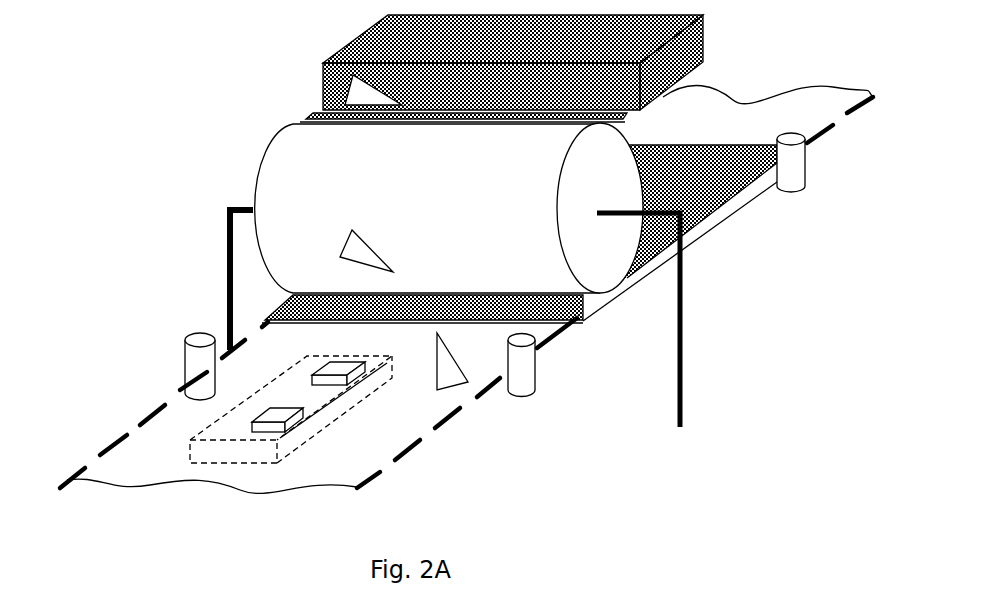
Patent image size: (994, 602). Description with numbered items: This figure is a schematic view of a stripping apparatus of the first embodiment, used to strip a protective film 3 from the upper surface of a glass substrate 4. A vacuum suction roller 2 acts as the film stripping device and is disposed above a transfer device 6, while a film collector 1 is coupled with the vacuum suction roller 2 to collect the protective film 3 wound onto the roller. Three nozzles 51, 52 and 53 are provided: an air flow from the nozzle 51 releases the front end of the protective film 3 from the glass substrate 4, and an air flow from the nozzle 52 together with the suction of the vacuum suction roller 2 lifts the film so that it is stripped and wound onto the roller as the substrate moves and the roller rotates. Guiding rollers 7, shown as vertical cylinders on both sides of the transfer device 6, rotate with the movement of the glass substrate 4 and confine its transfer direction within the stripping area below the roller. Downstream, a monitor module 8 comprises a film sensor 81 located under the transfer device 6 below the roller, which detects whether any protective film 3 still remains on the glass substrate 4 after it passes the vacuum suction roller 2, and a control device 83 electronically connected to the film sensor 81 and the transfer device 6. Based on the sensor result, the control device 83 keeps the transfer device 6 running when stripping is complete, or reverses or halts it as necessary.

The film collector 1 is at (688, 34).
The vacuum suction roller 2 is at (296, 160).
The protective film 3 is at (690, 200).
The glass substrate 4 is at (705, 226).
The nozzle 51 is at (448, 377).
The nozzle 52 is at (340, 257).
The nozzle 53 is at (363, 97).
The transfer device 6 is at (128, 432).
The guiding roller 7 is at (797, 166).
The monitor module 8 is at (207, 462).
The film sensor 81 is at (363, 370).
The control device 83 is at (295, 418).